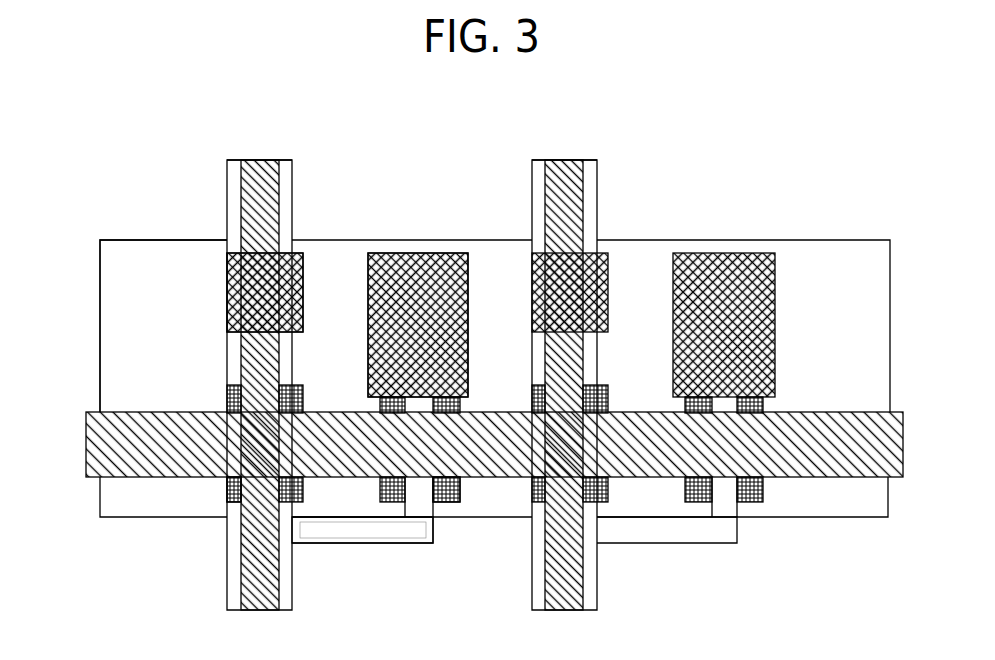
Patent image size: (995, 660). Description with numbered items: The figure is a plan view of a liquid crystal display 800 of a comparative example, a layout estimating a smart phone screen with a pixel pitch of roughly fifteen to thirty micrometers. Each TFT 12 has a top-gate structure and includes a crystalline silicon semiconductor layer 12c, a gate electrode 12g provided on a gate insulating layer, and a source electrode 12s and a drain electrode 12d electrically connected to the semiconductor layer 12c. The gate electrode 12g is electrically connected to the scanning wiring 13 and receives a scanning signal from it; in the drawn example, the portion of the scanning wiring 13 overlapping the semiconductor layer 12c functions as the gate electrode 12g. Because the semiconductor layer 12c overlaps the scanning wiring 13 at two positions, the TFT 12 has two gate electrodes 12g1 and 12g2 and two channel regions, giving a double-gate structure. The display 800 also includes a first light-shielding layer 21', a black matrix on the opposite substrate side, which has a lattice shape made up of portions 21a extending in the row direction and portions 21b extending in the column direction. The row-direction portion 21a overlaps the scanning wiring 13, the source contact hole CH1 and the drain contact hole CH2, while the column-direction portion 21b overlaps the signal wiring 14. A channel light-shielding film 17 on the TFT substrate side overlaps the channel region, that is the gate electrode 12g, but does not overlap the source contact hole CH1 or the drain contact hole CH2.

The liquid crystal display 800 is at (830, 153).
The first light-shielding layer 21' is at (349, 155).
The portion extending in the row direction 21a is at (131, 256).
The portion extending in the column direction 21b is at (227, 190).
The signal wiring 14 is at (276, 192).
The source electrode 12s is at (306, 252).
The drain electrode 12d is at (390, 253).
The source contact hole CH1 is at (248, 298).
The drain contact hole CH2 is at (428, 320).
The scanning wiring 13 is at (86, 447).
The gate electrode 12g1 is at (234, 505).
The gate electrode 12g2 is at (438, 508).
The gate electrode 12g is at (330, 542).
The crystalline silicon semiconductor layer 12c is at (330, 530).
The gate insulating film 17 is at (396, 518).
The TFT 12 is at (362, 560).